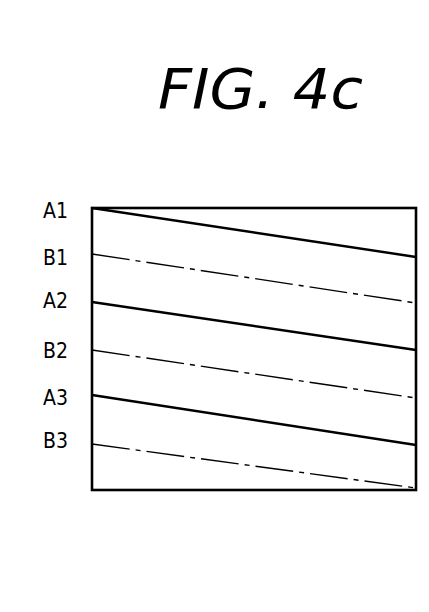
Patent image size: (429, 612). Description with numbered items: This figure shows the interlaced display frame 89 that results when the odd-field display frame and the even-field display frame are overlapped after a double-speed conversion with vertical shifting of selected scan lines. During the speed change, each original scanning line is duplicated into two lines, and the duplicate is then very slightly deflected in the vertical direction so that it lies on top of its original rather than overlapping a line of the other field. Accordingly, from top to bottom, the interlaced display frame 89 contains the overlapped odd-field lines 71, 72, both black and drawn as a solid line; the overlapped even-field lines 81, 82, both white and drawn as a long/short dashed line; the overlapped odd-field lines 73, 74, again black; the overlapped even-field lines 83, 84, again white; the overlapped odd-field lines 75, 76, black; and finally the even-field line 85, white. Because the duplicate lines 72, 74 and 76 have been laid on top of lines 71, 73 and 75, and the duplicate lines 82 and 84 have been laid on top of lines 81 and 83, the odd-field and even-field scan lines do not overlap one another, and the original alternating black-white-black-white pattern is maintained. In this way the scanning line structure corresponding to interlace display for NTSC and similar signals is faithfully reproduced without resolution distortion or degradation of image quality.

The interlaced display frame 89 is at (342, 208).
The original odd-field scan line 71 is at (254, 243).
The duplicate odd-field scan line 72 is at (245, 231).
The original even-field scan line 81 is at (254, 290).
The duplicate even-field scan line 82 is at (245, 277).
The original odd-field scan line 73 is at (254, 337).
The duplicate odd-field scan line 74 is at (245, 325).
The original even-field scan line 83 is at (254, 385).
The duplicate even-field scan line 84 is at (245, 373).
The original odd-field scan line 75 is at (254, 431).
The duplicate odd-field scan line 76 is at (245, 419).
The even-field scan line 85 is at (142, 451).